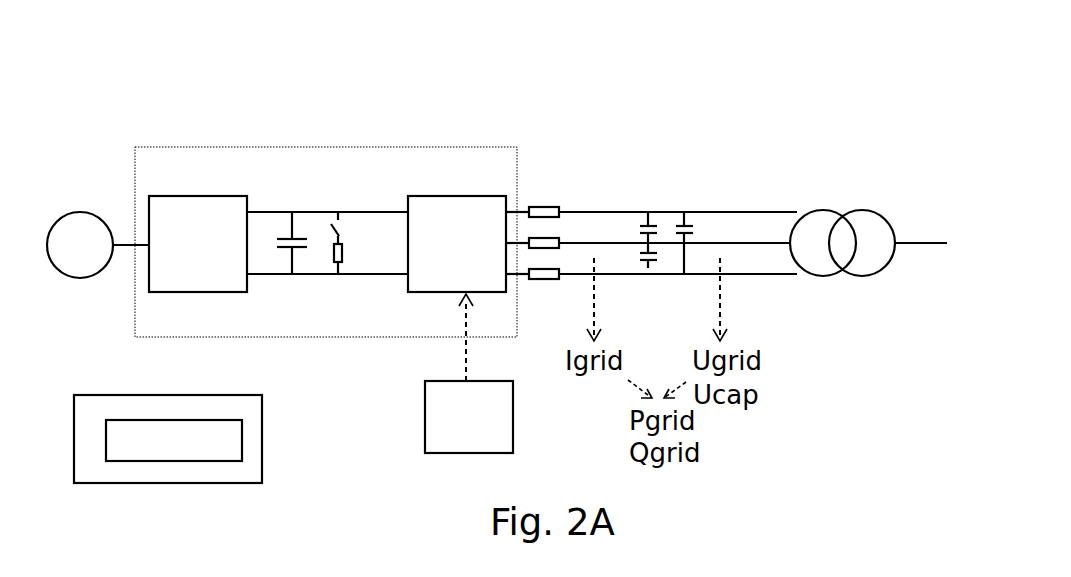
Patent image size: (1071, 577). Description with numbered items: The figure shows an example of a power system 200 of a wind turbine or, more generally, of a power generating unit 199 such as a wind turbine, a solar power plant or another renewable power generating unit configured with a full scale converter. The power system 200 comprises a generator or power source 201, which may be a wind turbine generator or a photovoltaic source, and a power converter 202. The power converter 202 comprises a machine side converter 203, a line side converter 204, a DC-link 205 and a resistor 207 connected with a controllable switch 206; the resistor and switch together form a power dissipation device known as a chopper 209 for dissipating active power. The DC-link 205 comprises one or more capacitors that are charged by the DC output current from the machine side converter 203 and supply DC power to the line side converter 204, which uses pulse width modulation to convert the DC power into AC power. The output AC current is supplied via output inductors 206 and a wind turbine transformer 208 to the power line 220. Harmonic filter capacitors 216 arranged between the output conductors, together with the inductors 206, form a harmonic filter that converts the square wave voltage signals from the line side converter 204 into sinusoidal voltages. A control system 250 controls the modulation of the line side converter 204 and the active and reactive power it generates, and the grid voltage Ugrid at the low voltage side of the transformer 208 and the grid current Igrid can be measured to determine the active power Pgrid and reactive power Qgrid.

The power generating unit 199 is at (139, 490).
The power system 200 is at (337, 43).
The generator or power source 201 is at (72, 210).
The power converter 202 is at (330, 133).
The machine side converter 203 is at (190, 188).
The line side converter 204 is at (440, 196).
The DC-link 205 is at (285, 220).
The controllable switch / output inductors 206 is at (342, 223).
The resistor 207 is at (343, 255).
The wind turbine transformer 208 is at (837, 205).
The chopper 209 is at (323, 262).
The harmonic filter capacitors 216 is at (662, 217).
The power line 220 is at (925, 248).
The control system 250 is at (422, 418).